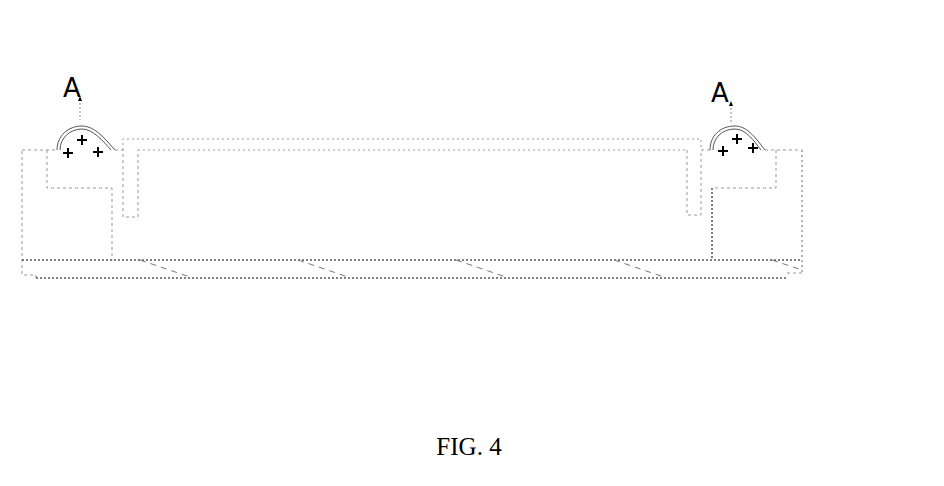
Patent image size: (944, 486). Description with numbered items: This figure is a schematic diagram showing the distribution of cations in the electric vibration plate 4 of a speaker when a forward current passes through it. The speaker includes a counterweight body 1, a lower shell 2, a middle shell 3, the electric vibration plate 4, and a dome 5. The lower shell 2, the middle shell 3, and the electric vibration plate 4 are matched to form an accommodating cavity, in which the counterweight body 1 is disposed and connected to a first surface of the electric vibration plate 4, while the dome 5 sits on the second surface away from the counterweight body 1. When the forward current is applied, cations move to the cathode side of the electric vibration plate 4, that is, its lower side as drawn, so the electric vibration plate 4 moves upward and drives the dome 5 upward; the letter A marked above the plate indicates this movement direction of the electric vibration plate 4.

The counterweight body 1 is at (688, 215).
The lower shell 2 is at (420, 277).
The middle shell 3 is at (802, 227).
The electric vibration plate 4 is at (763, 150).
The dome 5 is at (390, 145).